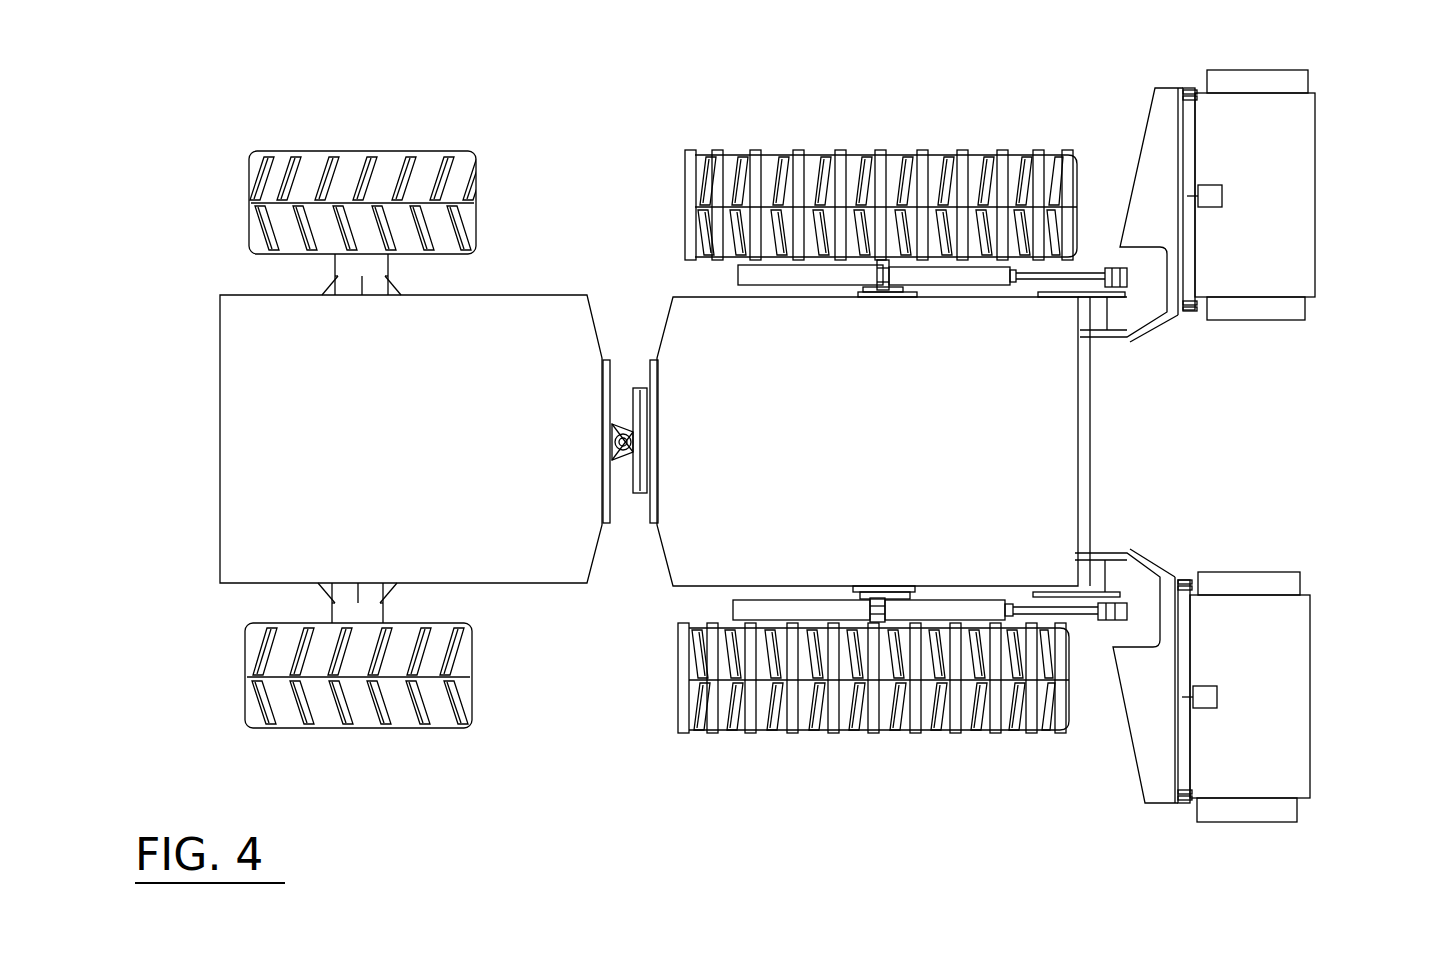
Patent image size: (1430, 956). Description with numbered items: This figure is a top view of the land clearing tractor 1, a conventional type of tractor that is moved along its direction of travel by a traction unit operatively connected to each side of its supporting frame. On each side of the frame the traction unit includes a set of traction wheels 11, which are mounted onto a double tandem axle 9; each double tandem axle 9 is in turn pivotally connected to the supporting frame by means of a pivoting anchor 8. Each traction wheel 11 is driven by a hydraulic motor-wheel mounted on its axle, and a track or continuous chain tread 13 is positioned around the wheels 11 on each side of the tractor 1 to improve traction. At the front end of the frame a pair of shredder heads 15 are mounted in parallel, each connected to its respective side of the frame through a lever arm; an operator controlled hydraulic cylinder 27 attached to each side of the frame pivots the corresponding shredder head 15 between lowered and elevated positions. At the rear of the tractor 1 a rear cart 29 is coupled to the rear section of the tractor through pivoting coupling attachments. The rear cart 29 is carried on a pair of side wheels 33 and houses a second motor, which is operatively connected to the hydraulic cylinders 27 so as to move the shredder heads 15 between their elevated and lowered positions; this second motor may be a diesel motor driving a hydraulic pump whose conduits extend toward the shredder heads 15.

The land clearing tractor 1 is at (962, 495).
The pivoting anchor 8 is at (905, 297).
The double tandem axle 9 is at (736, 277).
The traction wheels 11 is at (738, 155).
The continuous chain tread 13 is at (803, 150).
The shredder heads 15 is at (1315, 184).
The hydraulic cylinder 27 is at (1083, 272).
The rear cart 29 is at (401, 446).
The side wheels 33 is at (430, 152).